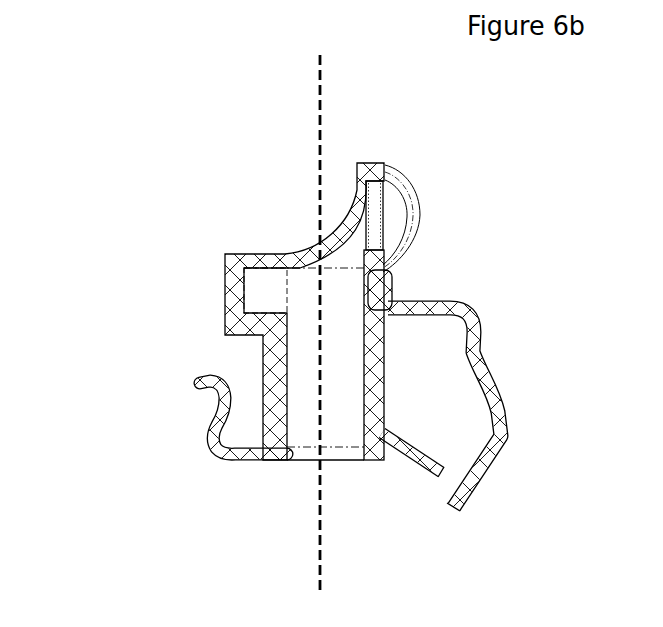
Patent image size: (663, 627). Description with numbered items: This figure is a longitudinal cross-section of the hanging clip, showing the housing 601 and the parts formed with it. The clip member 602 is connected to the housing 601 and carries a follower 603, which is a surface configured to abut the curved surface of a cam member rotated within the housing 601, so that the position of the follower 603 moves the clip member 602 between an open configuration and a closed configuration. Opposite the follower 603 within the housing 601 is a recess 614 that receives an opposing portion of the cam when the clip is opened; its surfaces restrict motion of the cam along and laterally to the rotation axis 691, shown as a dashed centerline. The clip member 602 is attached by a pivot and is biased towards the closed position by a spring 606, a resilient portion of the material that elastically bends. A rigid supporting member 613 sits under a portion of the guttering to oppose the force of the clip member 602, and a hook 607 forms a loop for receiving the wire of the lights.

The housing 601 is at (232, 276).
The clip member 602 is at (458, 472).
The follower 603 is at (384, 290).
The spring 606 is at (386, 171).
The hook 607 is at (188, 376).
The rigid supporting member 613 is at (415, 466).
The recess 614 is at (263, 295).
The rotation axis 691 is at (320, 503).